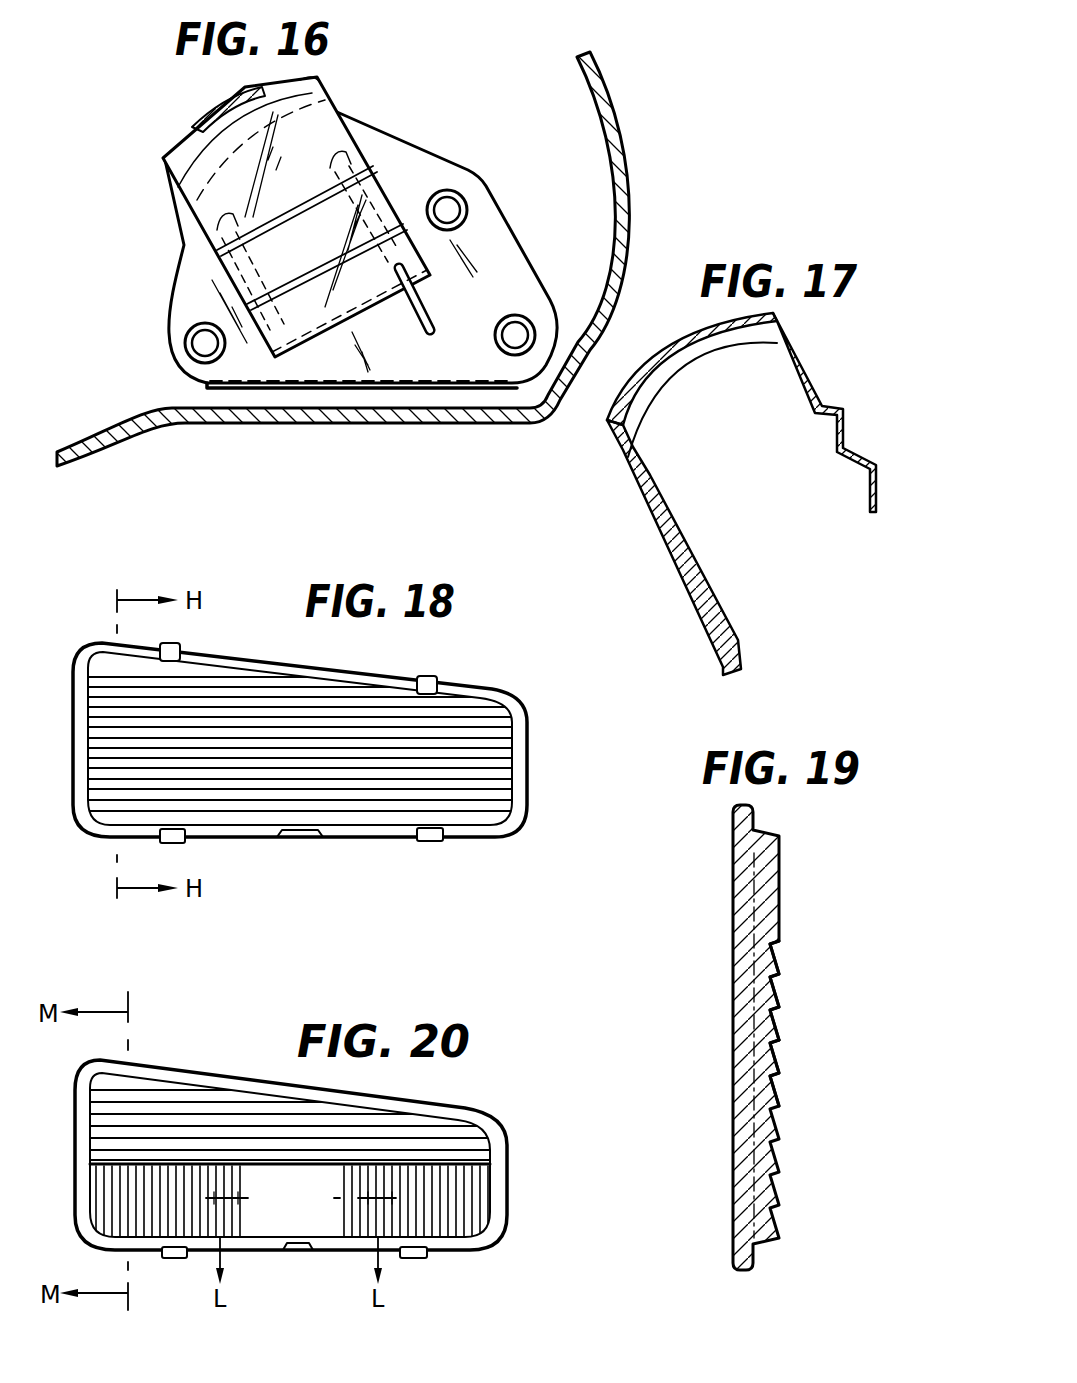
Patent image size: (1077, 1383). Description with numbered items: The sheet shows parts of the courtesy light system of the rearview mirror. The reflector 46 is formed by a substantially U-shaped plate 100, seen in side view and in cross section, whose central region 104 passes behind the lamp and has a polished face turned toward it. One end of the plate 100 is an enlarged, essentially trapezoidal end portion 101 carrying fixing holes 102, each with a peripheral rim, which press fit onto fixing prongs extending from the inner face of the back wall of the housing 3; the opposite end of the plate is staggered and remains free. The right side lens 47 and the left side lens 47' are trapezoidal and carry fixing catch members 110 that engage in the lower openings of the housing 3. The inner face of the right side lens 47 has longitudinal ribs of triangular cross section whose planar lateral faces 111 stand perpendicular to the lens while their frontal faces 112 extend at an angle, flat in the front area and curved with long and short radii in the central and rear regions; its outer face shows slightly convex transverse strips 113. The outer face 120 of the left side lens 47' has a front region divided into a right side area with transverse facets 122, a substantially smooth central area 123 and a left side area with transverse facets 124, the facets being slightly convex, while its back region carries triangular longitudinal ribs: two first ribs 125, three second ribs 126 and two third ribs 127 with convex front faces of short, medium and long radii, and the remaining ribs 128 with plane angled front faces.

In FIG. 16, the housing 3 is at (618, 157).
In FIG. 16, the reflector 46 is at (521, 162).
In FIG. 18, the right side lens 47 is at (325, 743).
In FIG. 19, the right side lens 47 is at (788, 1037).
In FIG. 20, the left side lens 47' is at (336, 1156).
In FIG. 16, the U-shaped plate 100 is at (340, 120).
In FIG. 17, the U-shaped plate 100 is at (690, 547).
In FIG. 16, the trapezoidal end portion 101 is at (367, 372).
In FIG. 17, the trapezoidal end portion 101 is at (703, 628).
In FIG. 16, the fixing holes 102 is at (520, 330).
In FIG. 16, the central region 104 is at (320, 83).
In FIG. 17, the central region 104 is at (714, 343).
In FIG. 18, the fixing catch members 110 is at (178, 650).
In FIG. 19, the lateral faces 111 is at (777, 1059).
In FIG. 19, the frontal faces 112 is at (779, 1004).
In FIG. 19, the transverse strips 113 is at (735, 1186).
In FIG. 20, the outer face 120 is at (403, 1133).
In FIG. 20, the right side area with transverse facets 122 is at (158, 1227).
In FIG. 20, the central area 123 is at (299, 1222).
In FIG. 20, the left side area with transverse facets 124 is at (458, 1220).
In FIG. 20, the first ribs 125 is at (482, 1160).
In FIG. 20, the second ribs 126 is at (453, 1138).
In FIG. 20, the third ribs 127 is at (332, 1113).
In FIG. 20, the remaining longitudinal ribs 128 is at (168, 1090).